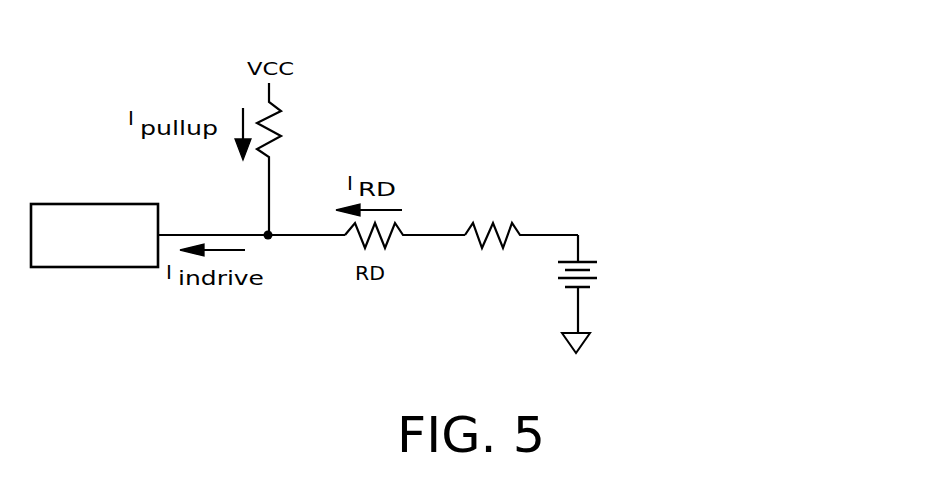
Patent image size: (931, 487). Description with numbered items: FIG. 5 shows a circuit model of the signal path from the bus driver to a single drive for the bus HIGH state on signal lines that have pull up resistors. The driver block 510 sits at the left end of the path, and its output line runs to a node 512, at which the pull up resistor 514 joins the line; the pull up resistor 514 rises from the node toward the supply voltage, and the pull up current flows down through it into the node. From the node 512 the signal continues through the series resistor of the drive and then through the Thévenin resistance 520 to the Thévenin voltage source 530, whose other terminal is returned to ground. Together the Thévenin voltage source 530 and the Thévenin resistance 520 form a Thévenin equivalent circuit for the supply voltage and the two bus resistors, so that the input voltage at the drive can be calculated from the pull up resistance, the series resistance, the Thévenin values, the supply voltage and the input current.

The driver (DRIVE N) 510 is at (91, 202).
The output node 512 is at (271, 227).
The pull-up resistor RPULLUP 514 is at (291, 118).
The RTH 520 is at (482, 217).
The VTH 530 is at (603, 277).